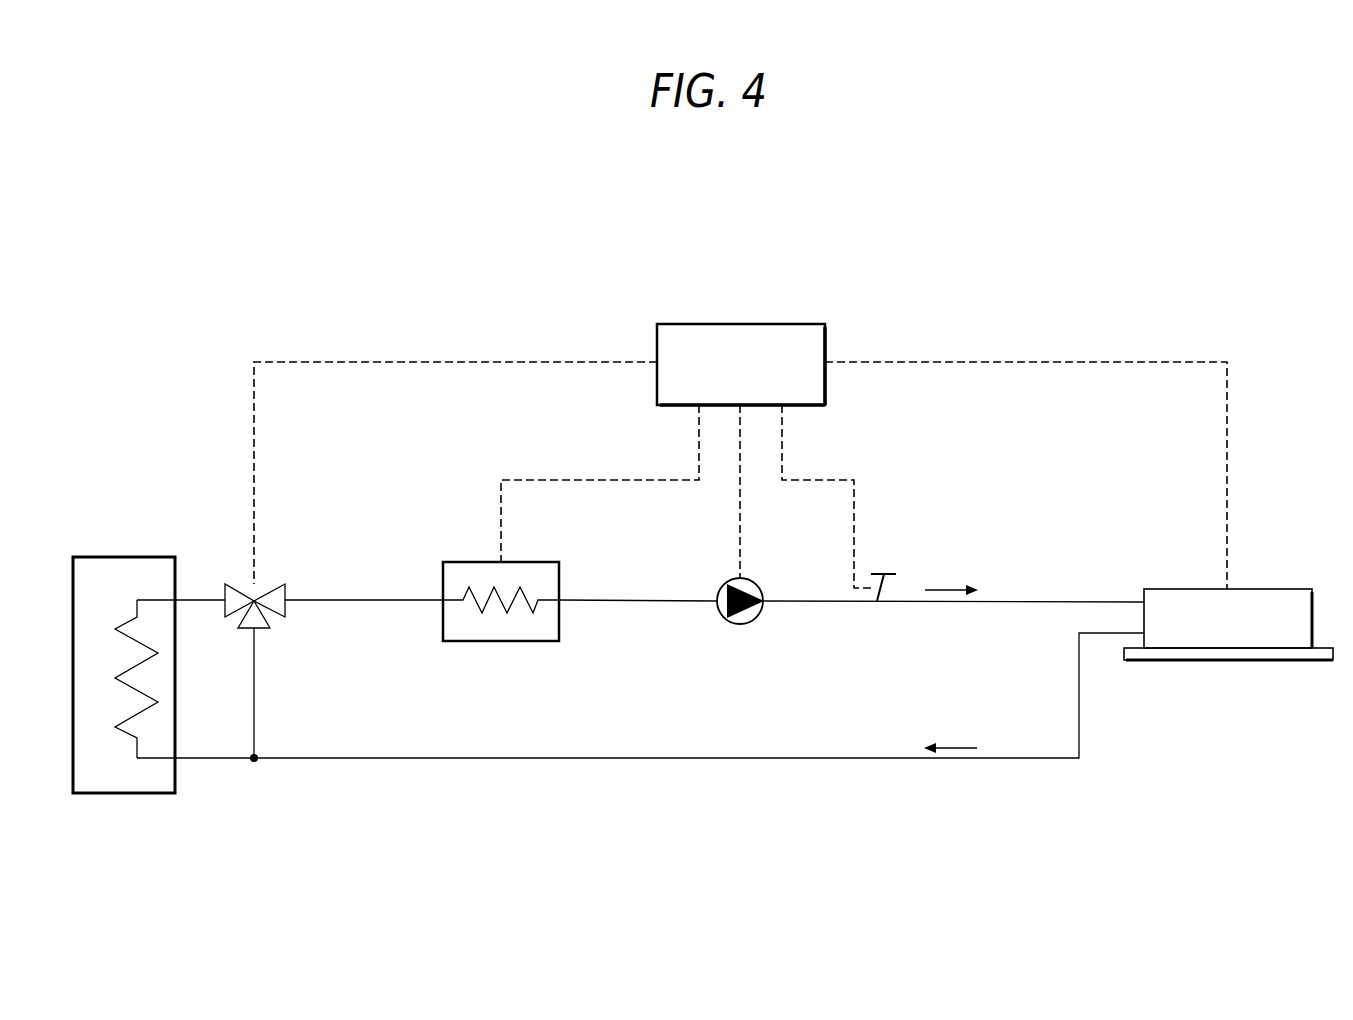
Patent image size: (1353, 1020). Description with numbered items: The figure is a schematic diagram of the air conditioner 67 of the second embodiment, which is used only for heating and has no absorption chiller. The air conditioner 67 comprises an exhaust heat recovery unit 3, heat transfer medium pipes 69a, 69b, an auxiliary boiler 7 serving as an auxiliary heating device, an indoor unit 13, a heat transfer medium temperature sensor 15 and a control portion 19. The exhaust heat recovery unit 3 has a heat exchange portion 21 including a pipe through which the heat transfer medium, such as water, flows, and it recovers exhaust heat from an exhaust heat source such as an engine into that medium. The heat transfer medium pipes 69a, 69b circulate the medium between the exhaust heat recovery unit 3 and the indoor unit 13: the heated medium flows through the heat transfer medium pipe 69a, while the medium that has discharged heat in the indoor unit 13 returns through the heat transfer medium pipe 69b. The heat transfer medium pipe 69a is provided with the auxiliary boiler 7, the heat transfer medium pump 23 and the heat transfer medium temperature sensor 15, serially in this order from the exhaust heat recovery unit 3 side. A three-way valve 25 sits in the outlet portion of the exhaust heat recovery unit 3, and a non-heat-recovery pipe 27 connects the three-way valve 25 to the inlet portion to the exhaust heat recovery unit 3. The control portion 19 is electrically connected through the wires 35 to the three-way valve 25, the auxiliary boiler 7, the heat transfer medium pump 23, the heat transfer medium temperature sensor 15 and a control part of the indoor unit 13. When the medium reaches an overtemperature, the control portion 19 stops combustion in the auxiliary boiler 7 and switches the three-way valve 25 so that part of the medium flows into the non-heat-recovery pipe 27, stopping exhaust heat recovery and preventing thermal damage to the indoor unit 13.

The exhaust heat recovery unit 3 is at (130, 557).
The auxiliary boiler 7 is at (528, 562).
The indoor unit 13 is at (1270, 589).
The heat transfer medium temperature sensor 15 is at (884, 574).
The control portion 19 is at (738, 324).
The heat exchange portion 21 is at (132, 619).
The heat transfer medium pump 23 is at (745, 625).
The three-way valve 25 is at (287, 606).
The non-heat-recovery pipe 27 is at (256, 678).
The wires 35 is at (462, 362).
The air conditioner 67 is at (972, 268).
The heat transfer medium pipe 69a is at (1012, 603).
The heat transfer medium pipe 69b is at (1012, 758).